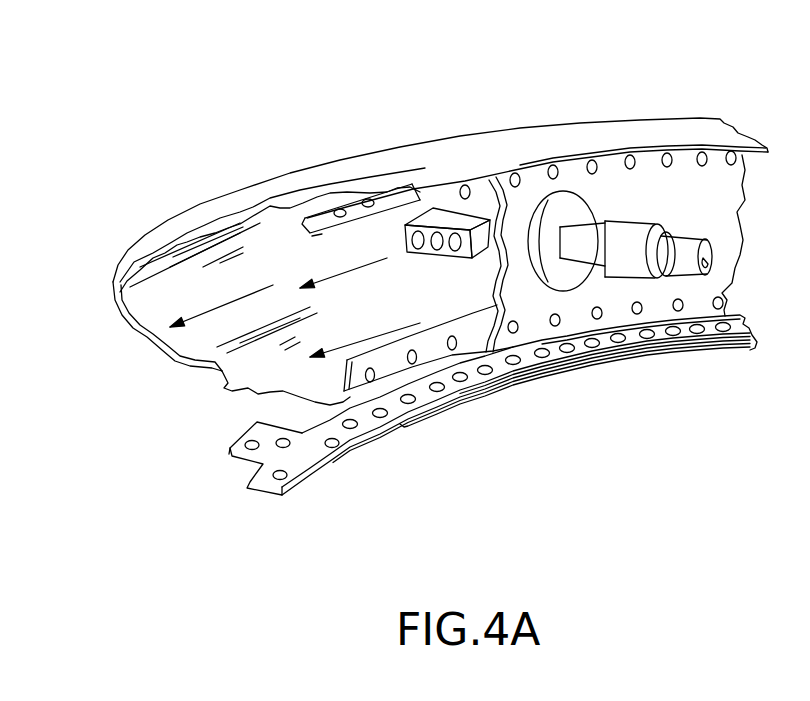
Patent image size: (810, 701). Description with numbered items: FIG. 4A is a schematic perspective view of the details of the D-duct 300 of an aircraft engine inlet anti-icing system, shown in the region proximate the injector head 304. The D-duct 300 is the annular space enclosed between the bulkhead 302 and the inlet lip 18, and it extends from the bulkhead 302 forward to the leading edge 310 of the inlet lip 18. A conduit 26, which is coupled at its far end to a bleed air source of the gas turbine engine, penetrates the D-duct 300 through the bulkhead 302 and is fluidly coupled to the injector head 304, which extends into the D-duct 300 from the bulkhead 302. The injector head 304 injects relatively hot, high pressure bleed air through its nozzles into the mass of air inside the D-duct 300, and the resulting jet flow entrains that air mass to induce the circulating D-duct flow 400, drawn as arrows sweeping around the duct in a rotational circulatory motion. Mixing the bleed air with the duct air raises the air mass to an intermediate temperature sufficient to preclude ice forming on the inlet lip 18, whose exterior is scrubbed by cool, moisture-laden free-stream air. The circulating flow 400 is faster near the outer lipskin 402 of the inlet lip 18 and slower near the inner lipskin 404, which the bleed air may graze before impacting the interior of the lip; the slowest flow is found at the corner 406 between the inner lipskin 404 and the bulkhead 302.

The D-duct 300 is at (641, 86).
The inlet lip 18 is at (320, 185).
The leading edge 310 is at (110, 287).
The outer lipskin 402 is at (294, 203).
The injector head 304 is at (442, 217).
The conduit 26 is at (640, 233).
The circulating D-duct flow 400 is at (337, 278).
The corner 406 is at (337, 400).
The inner lipskin 404 is at (227, 380).
The bulkhead 302 is at (653, 293).